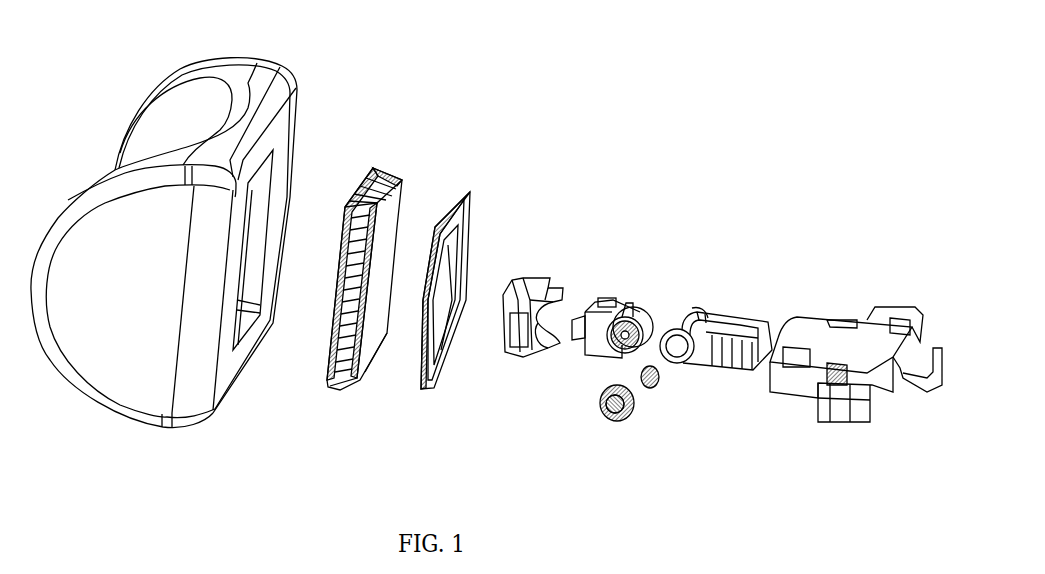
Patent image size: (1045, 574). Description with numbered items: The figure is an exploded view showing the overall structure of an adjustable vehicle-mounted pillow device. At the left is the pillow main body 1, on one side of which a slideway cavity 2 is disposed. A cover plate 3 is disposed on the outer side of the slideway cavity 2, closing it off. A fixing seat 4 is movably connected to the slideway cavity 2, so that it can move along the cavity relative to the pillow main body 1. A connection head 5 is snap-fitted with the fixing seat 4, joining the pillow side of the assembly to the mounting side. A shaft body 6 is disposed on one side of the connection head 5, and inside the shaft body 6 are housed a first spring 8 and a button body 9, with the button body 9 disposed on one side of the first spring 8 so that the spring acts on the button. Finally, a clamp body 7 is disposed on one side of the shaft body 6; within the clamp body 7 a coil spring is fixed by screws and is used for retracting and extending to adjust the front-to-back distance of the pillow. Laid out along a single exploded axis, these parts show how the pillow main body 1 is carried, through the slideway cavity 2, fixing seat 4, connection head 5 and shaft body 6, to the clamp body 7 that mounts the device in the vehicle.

The pillow main body 1 is at (148, 88).
The slideway cavity 2 is at (385, 178).
The cover plate 3 is at (470, 197).
The fixing seat 4 is at (540, 278).
The connection head 5 is at (638, 307).
The shaft body 6 is at (747, 318).
The clamp body 7 is at (798, 328).
The first spring 8 is at (655, 388).
The button body 9 is at (620, 423).